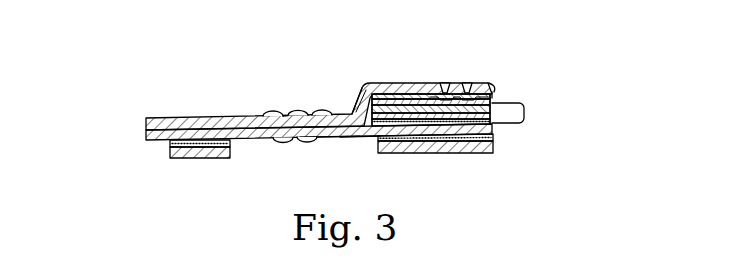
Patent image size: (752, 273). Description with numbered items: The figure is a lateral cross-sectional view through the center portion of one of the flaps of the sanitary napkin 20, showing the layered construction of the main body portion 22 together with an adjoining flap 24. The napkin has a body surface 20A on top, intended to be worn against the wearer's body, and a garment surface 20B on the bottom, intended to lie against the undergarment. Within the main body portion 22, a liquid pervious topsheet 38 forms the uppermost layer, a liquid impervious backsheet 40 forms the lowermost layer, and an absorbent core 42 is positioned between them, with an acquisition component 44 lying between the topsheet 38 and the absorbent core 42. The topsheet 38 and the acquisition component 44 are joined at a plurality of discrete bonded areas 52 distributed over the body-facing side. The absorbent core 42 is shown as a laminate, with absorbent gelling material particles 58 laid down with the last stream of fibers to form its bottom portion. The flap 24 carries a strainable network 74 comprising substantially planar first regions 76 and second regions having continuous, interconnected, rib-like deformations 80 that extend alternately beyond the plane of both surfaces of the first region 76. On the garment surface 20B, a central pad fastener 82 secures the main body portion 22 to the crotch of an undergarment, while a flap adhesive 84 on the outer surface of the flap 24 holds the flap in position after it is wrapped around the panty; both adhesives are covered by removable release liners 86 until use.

The sanitary napkin 20 is at (433, 70).
The body surface 20A is at (380, 70).
The garment surface 20B is at (357, 152).
The main body portion 22 is at (405, 72).
The flaps 24 is at (229, 104).
The liquid pervious topsheet 38 is at (493, 86).
The liquid impervious backsheet 40 is at (347, 138).
The absorbent core 42 is at (524, 113).
The acquisition component 44 is at (508, 96).
The bonded areas 52 is at (445, 86).
The absorbent gelling material particles 58 is at (493, 120).
The strainable network 74 is at (298, 88).
The first region 76 is at (311, 113).
The rib-like deformations 80 is at (273, 113).
The central pad fastener 82 is at (473, 147).
The flap adhesive 84 is at (168, 147).
The release liners 86 is at (214, 157).